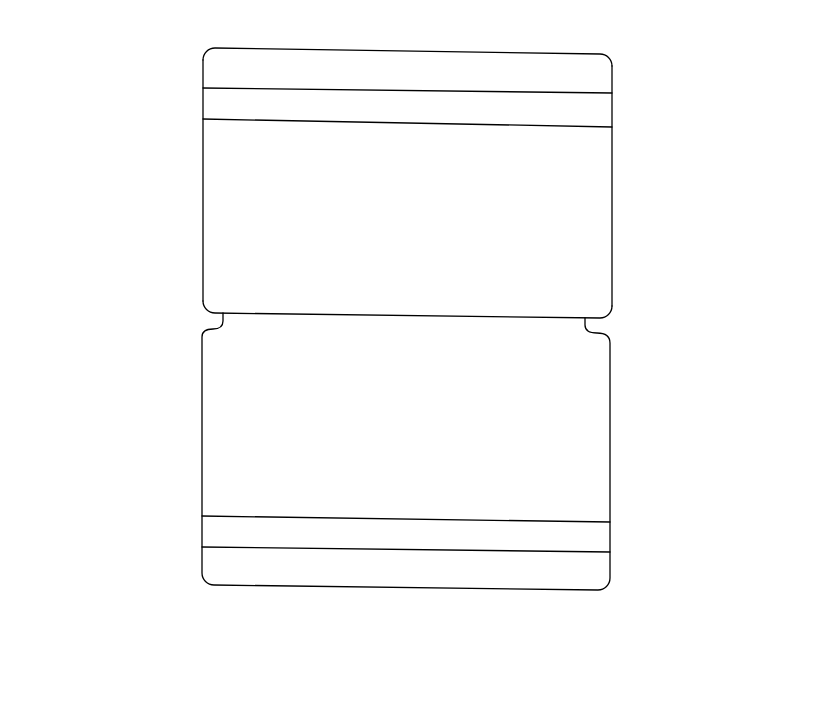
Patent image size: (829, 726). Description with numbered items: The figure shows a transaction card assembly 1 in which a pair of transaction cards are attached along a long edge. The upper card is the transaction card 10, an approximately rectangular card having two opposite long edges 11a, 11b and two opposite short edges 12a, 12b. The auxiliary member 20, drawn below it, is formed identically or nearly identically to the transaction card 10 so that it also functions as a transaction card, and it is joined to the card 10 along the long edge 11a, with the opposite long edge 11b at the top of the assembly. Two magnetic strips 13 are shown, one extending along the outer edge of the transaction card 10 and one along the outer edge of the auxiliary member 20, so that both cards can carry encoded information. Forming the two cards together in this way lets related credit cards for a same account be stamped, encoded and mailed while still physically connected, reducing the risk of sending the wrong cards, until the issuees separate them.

The transaction card assembly 1 is at (135, 45).
The transaction card 10 is at (613, 197).
The long edge 11a is at (219, 318).
The long edge 11b is at (583, 53).
The short edge 12a is at (203, 192).
The short edge 12b is at (611, 256).
The magnetic strip 13 is at (203, 117).
The auxiliary member 20 is at (611, 399).